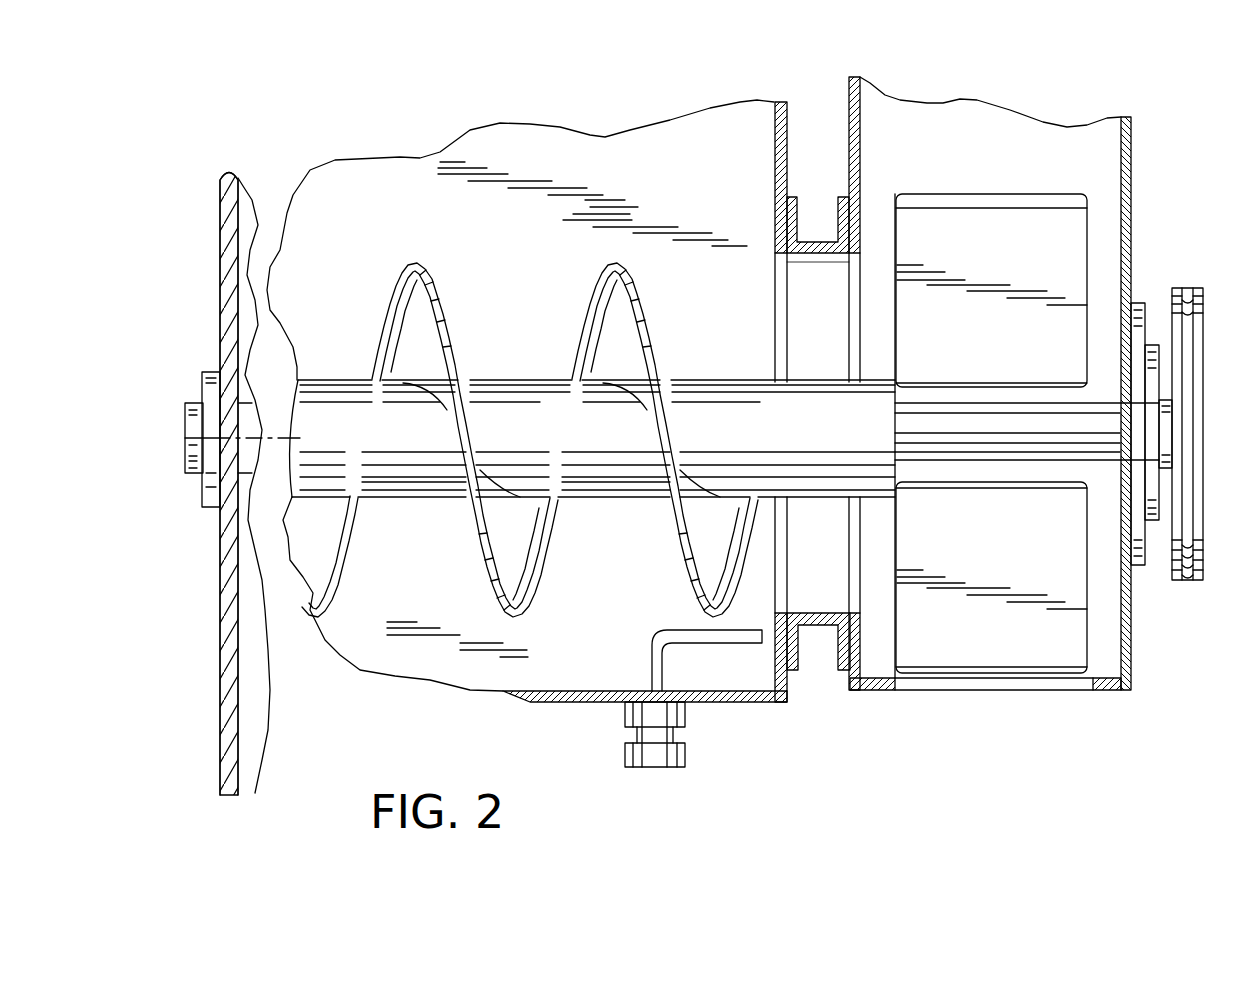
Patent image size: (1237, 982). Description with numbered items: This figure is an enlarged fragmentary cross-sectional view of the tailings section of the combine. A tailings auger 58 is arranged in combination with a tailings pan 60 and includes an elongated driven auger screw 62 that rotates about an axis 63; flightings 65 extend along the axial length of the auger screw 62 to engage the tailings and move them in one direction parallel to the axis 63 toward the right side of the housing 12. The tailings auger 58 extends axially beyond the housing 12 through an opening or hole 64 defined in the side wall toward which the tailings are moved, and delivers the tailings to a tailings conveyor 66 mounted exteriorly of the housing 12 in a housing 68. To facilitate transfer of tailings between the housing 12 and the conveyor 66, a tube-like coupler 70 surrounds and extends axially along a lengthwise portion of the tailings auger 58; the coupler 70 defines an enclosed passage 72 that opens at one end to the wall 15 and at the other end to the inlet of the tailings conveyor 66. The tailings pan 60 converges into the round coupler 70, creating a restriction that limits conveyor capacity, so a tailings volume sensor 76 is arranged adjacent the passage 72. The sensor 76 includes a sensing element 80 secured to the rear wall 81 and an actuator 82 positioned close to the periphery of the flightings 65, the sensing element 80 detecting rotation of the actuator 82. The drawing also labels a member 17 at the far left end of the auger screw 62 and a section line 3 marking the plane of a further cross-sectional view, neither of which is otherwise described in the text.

The section line 3- 3 is at (757, 74).
The housing 12 is at (800, 62).
The wall 15 is at (782, 143).
The mounting plate 17 is at (220, 748).
The tailings auger 58 is at (465, 285).
The tailings pan 60 is at (580, 649).
The auger screw 62 is at (482, 383).
The axis 63 is at (327, 437).
The opening or hole 64 is at (772, 264).
The flightings 65 is at (677, 570).
The tailings conveyor 66 is at (1140, 135).
The housing 68 is at (847, 112).
The tube-like coupler 70 is at (817, 657).
The enclosed passage 72 is at (762, 328).
The tailings volume sensor 76 is at (585, 718).
The sensing element 80 is at (632, 768).
The rear wall 81 is at (555, 690).
The actuator 82 is at (690, 647).